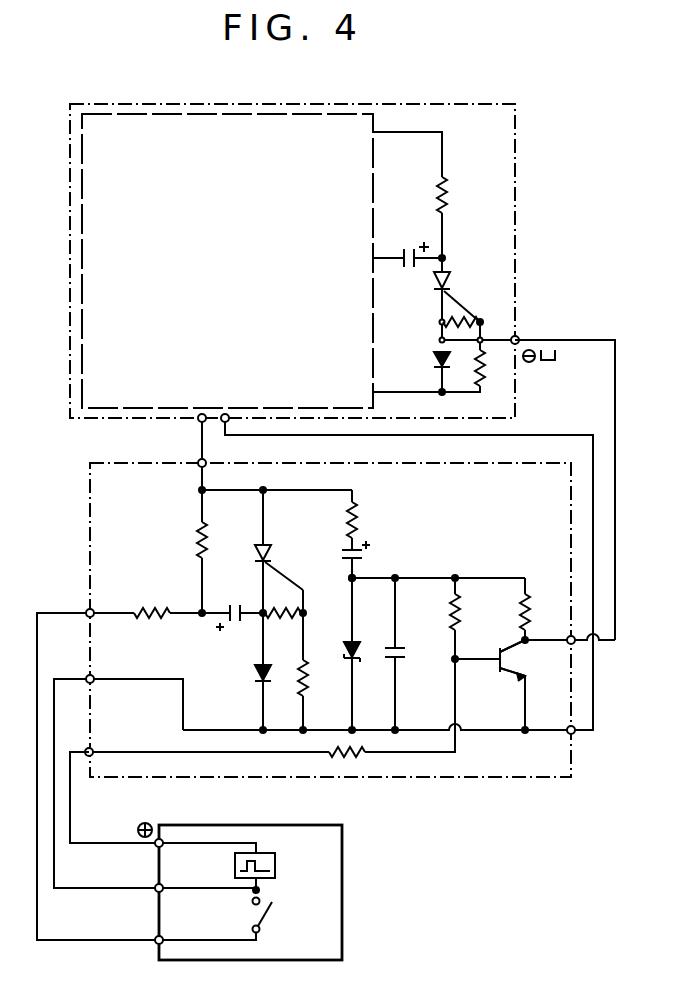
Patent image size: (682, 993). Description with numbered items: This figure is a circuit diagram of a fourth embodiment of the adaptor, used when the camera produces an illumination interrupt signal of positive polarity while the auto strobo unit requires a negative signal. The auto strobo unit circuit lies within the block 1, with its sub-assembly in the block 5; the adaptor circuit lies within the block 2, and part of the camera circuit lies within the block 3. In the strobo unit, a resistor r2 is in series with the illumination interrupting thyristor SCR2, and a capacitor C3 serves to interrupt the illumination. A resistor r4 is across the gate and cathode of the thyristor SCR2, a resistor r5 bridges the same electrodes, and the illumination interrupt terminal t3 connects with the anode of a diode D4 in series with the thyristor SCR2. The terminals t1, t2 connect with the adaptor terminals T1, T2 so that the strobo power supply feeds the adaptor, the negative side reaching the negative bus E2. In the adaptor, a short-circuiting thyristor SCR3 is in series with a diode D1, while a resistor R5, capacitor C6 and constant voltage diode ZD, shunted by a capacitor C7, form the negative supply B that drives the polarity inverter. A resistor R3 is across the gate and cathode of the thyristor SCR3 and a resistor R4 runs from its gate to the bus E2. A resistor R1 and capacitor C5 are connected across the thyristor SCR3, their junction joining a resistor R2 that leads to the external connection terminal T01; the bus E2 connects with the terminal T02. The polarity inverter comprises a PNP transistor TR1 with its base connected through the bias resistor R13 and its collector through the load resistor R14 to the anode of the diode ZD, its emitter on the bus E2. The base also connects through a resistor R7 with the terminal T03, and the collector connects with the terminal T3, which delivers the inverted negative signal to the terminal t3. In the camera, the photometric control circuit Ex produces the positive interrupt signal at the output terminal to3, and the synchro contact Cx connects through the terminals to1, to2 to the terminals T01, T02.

The block of the auto strobo unit 1 is at (516, 193).
The block of the adaptor 2 is at (455, 778).
The block of the camera circuit 3 is at (342, 872).
The block of the auto strobo unit sub-assembly 5 is at (84, 236).
The resistor r2 is at (450, 195).
The capacitor C3 is at (405, 254).
The illumination interrupting thyristor SCR2 is at (450, 281).
The resistor r5 is at (441, 317).
The diode D4 is at (434, 360).
The resistor r4 is at (481, 380).
The terminal t1 is at (202, 414).
The terminal t2 is at (225, 414).
The illumination interrupt terminal t3 is at (517, 338).
The terminal T1 is at (200, 468).
The terminal T2 is at (568, 728).
The terminal T3 is at (568, 646).
The external connection terminal T01 is at (87, 609).
The external connection terminal T02 is at (88, 675).
The external connection terminal T03 is at (90, 750).
The resistor R1 is at (197, 536).
The resistor R2 is at (152, 607).
The resistor R3 is at (278, 622).
The resistor R4 is at (307, 690).
The resistor R5 is at (358, 524).
The resistor R7 is at (356, 748).
The bias resistor R13 is at (462, 605).
The load resistor R14 is at (532, 605).
The capacitor C5 is at (230, 606).
The capacitor C6 is at (363, 557).
The capacitor C7 is at (406, 653).
The short-circuiting thyristor SCR3 is at (269, 553).
The diode D1 is at (256, 680).
The constant voltage diode ZD is at (362, 650).
The PNP transistor TR1 is at (504, 672).
The negative supply B is at (350, 581).
The negative bus E2 is at (490, 732).
The terminal to1 is at (155, 946).
The terminal to2 is at (155, 894).
The output terminal to3 is at (155, 849).
The photometric control circuit Ex is at (275, 866).
The synchro contact Cx is at (263, 918).